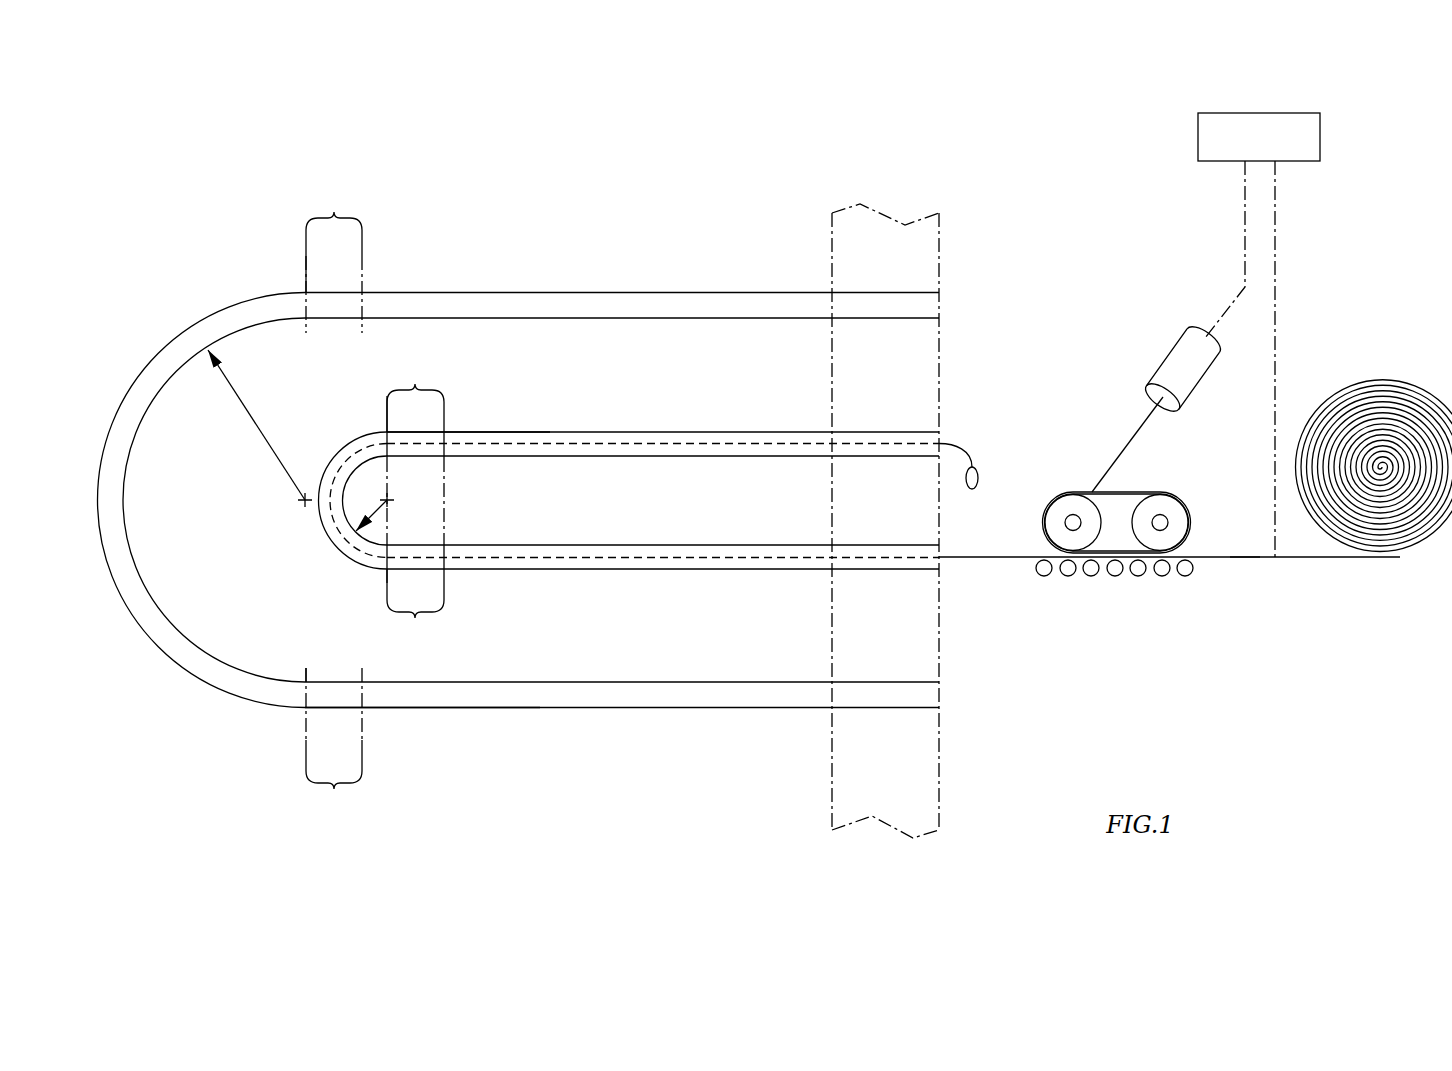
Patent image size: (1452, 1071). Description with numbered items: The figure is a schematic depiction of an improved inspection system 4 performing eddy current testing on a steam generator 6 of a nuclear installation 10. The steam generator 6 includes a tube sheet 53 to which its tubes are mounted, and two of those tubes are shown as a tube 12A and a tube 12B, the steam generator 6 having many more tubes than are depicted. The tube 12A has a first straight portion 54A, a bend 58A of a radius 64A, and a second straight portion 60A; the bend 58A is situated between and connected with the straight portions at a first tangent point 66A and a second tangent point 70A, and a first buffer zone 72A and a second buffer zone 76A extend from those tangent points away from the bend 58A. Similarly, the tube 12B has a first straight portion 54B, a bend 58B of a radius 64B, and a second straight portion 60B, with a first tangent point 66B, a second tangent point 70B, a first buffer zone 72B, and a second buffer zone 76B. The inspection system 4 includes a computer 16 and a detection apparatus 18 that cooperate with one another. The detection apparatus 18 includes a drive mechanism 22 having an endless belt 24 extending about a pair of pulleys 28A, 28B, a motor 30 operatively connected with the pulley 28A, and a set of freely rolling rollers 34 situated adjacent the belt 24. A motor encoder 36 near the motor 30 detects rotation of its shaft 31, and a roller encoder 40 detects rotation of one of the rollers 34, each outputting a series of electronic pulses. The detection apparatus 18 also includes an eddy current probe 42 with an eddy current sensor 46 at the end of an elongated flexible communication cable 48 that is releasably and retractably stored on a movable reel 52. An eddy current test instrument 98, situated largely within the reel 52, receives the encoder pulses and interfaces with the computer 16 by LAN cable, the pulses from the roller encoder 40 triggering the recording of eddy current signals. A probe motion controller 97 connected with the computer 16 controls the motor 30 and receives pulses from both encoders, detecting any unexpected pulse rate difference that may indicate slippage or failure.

The inspection system 4 is at (1103, 147).
The steam generator 6 is at (940, 776).
The nuclear installation 10 is at (648, 810).
The tube 12A is at (552, 432).
The tube 12B is at (542, 708).
The computer 16 is at (1197, 133).
The detection apparatus 18 is at (1114, 634).
The drive mechanism 22 is at (1065, 490).
The endless belt 24 is at (1040, 543).
The pulley 28A is at (1063, 508).
The pulley 28B is at (1175, 510).
The motor 30 is at (1190, 338).
The shaft 31 is at (1118, 450).
The rollers 34 is at (1185, 576).
The motor encoder 36 is at (1163, 403).
The roller encoder 40 is at (1128, 568).
The eddy current probe 42 is at (987, 560).
The eddy current sensor 46 is at (965, 480).
The communication cable 48 is at (1245, 560).
The reel 52 is at (1370, 378).
The tube sheet 53 is at (832, 745).
The first straight portion 54A is at (630, 432).
The first straight portion 54B is at (540, 293).
The bend 58A is at (355, 440).
The bend 58B is at (175, 662).
The second straight portion 60A is at (625, 545).
The second straight portion 60B is at (595, 682).
The radius 64A is at (368, 488).
The radius 64B is at (243, 404).
The first tangent point 66A is at (387, 396).
The first tangent point 66B is at (306, 290).
The second tangent point 70A is at (387, 583).
The second tangent point 70B is at (306, 680).
The first buffer zone 72A is at (415, 385).
The first buffer zone 72B is at (334, 212).
The second buffer zone 76A is at (425, 612).
The second buffer zone 76B is at (334, 789).
The probe motion controller 97 is at (1200, 160).
The eddy current test instrument 98 is at (1280, 217).